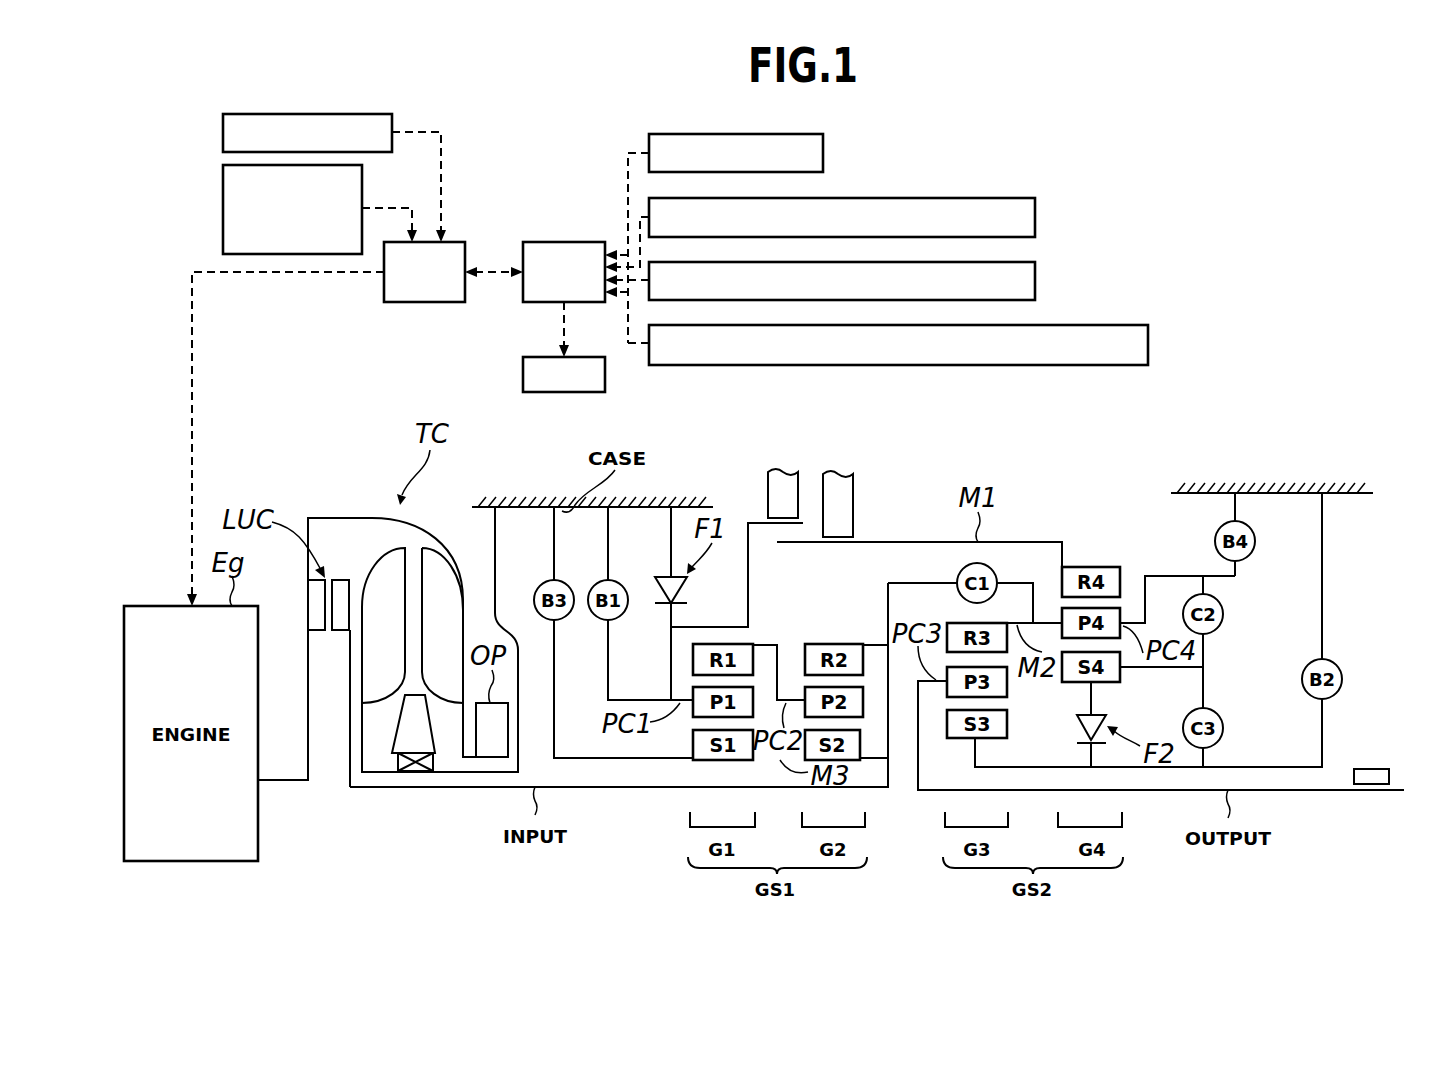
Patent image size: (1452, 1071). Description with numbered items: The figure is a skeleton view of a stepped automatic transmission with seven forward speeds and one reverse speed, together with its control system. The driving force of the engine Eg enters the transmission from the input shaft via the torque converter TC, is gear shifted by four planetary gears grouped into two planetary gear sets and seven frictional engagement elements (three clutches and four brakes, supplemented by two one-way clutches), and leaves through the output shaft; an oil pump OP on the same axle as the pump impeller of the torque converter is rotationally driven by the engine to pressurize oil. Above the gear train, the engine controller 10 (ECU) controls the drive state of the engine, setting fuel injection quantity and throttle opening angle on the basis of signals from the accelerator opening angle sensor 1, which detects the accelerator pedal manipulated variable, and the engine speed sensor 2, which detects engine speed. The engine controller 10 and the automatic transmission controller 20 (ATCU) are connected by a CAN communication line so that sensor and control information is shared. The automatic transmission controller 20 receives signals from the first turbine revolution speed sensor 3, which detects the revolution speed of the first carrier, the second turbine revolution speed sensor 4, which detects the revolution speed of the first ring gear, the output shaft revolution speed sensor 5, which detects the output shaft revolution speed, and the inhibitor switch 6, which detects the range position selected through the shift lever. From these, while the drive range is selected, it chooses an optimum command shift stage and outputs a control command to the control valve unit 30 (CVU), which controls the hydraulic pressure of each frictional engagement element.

The accelerator opening angle sensor 1 is at (223, 131).
The engine speed sensor 2 is at (223, 210).
The first turbine revolution speed sensor 3 is at (1035, 218).
The second turbine revolution speed sensor 4 is at (1035, 280).
The output shaft revolution speed sensor 5 is at (1148, 343).
The inhibitor switch 6 is at (823, 153).
The engine controller 10 is at (430, 302).
The automatic transmission controller 20 is at (564, 242).
The control valve unit 30 is at (523, 376).